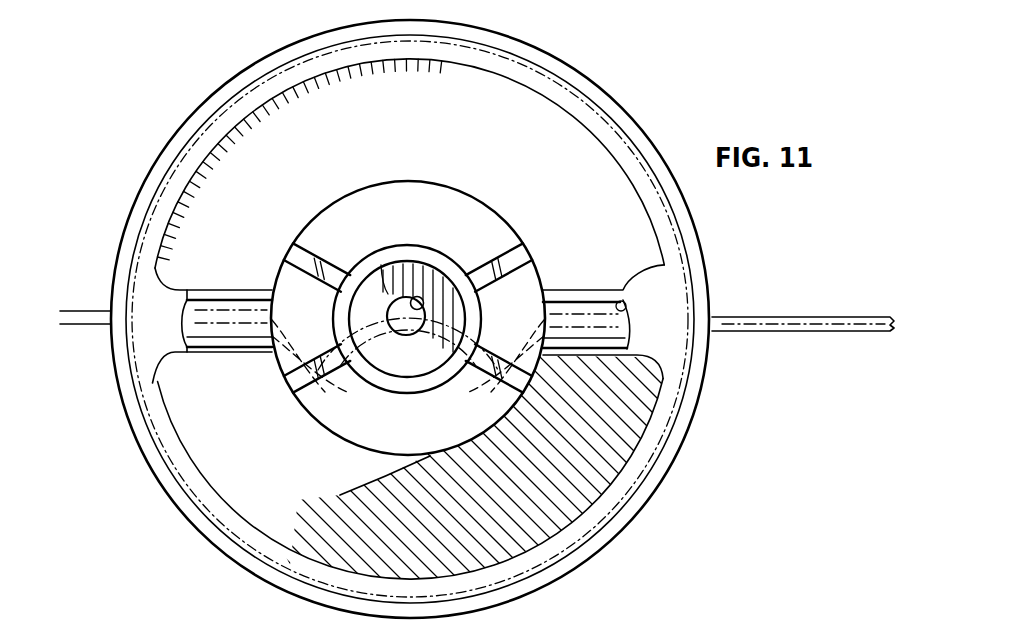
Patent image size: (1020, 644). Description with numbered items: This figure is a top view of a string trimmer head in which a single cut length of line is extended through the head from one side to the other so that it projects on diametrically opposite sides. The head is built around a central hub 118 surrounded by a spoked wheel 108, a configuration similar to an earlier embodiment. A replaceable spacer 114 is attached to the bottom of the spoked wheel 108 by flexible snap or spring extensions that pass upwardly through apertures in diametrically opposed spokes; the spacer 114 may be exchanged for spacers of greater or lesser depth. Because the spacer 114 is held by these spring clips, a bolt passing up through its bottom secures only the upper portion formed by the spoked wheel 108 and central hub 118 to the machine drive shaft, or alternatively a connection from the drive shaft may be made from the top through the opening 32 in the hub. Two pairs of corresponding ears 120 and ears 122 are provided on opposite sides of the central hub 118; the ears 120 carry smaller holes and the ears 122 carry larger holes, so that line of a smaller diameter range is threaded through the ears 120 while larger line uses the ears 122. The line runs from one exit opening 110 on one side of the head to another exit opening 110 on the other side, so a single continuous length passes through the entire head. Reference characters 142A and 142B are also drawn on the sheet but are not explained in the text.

The spoked wheel 108 is at (528, 78).
The exit opening 110 is at (665, 266).
The replaceable spacer 114 is at (688, 432).
The central hub 118 is at (385, 216).
The ears 120 is at (300, 388).
The ears 122 is at (310, 240).
The opening 32 is at (422, 300).
The wheel portion 142A is at (516, 636).
The wheel portion 142B is at (726, 636).